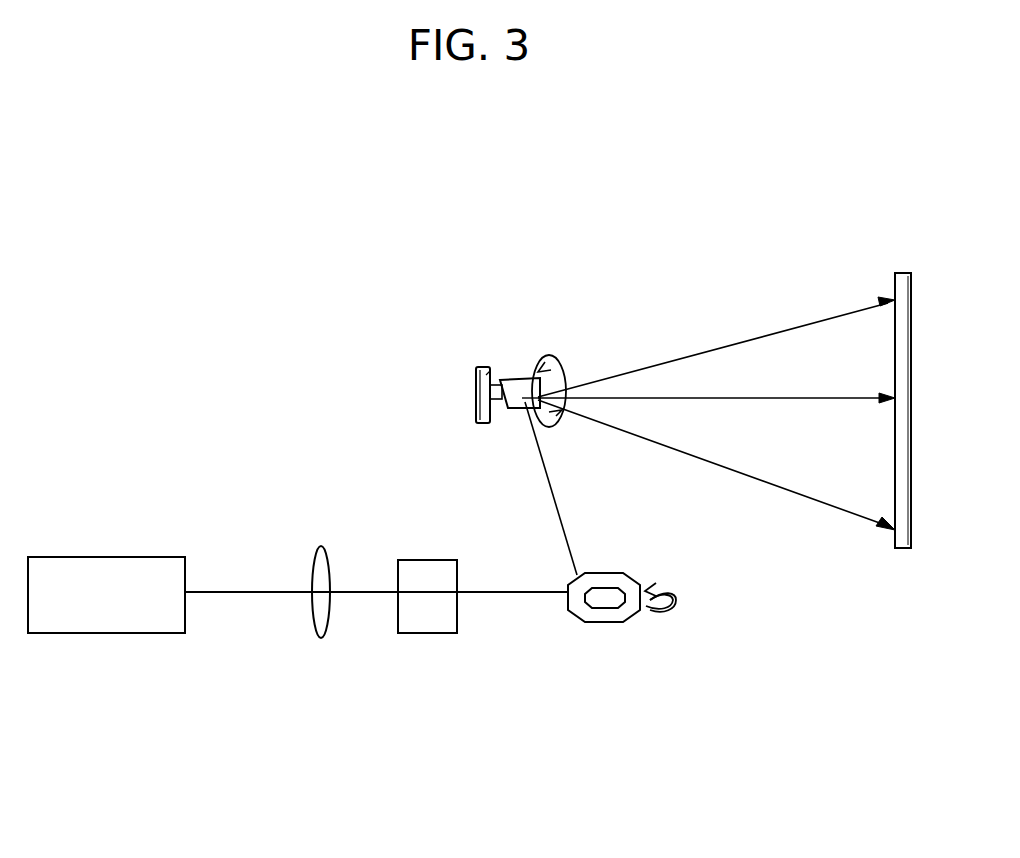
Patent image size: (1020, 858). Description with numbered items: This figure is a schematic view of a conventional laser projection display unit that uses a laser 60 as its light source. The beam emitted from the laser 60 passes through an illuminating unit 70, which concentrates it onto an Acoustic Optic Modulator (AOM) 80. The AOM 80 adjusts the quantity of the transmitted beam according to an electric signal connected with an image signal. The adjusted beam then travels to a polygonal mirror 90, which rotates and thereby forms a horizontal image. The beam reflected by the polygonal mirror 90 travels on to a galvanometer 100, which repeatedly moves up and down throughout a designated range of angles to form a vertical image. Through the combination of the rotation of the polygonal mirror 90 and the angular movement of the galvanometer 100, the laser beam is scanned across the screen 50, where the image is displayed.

The screen 50 is at (900, 548).
The laser 60 is at (106, 633).
The illuminating unit 70 is at (321, 638).
The Acoustic Optic Modulator (AOM) 80 is at (427, 633).
The polygonal mirror 90 is at (603, 622).
The galvanometer 100 is at (515, 380).